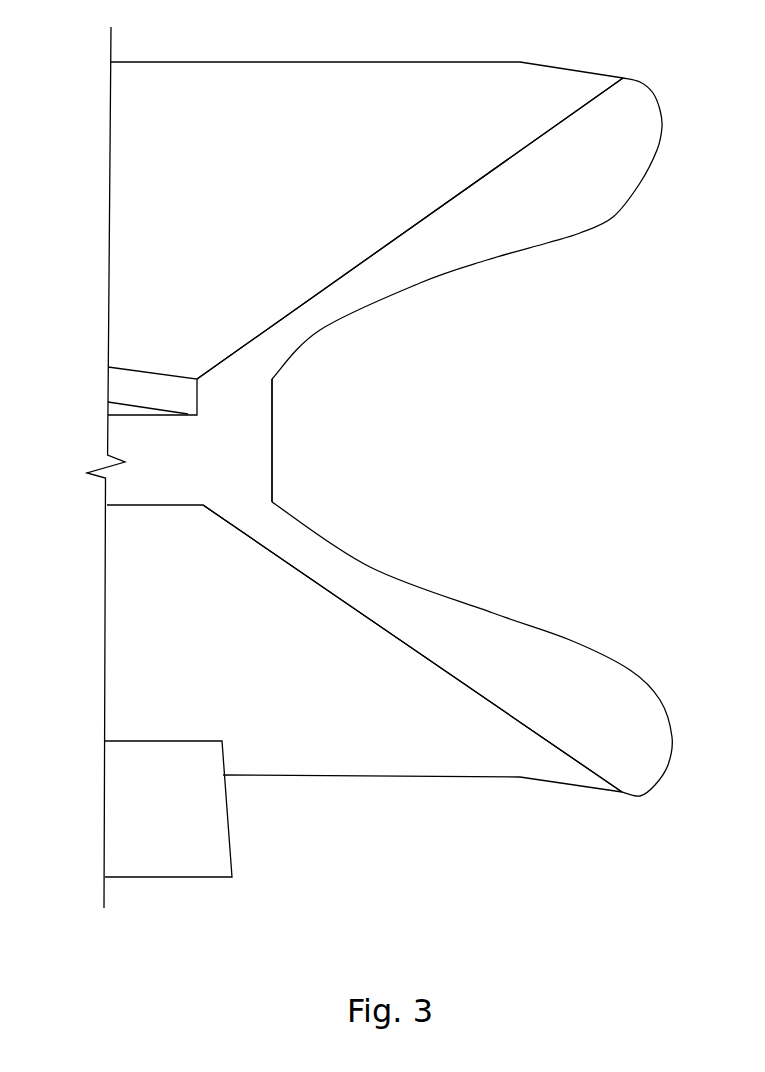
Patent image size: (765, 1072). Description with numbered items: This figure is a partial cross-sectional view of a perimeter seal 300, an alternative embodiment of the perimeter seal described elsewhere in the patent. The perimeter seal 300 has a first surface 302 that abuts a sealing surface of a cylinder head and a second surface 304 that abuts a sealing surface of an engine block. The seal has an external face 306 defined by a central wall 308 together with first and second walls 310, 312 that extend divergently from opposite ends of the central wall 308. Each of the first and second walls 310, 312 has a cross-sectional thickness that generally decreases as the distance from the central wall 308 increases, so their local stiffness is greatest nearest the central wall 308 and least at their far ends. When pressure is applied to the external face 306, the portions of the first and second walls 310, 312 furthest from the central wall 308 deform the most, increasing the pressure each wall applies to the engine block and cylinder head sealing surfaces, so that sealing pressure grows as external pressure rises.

The perimeter seal 300 is at (162, 230).
The first surface 302 is at (495, 60).
The second surface 304 is at (400, 777).
The external face 306 is at (277, 474).
The central wall 308 is at (274, 412).
The first wall 310 is at (547, 240).
The second wall 312 is at (495, 617).